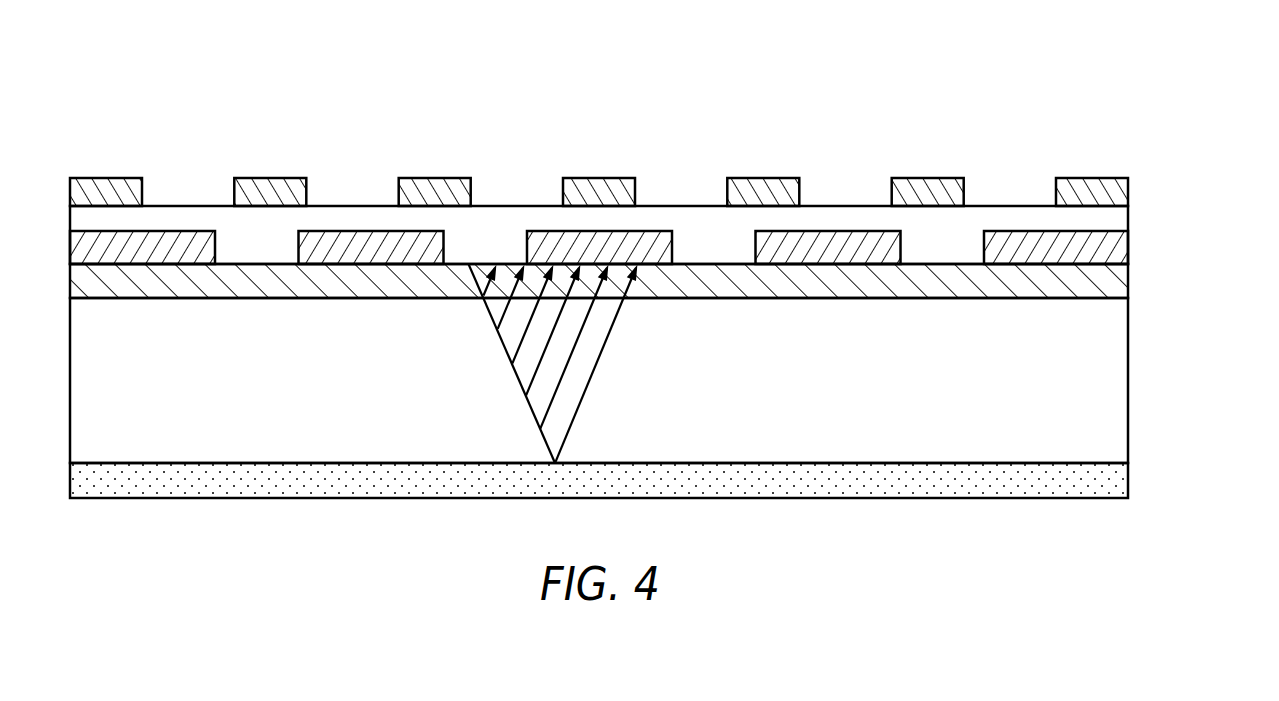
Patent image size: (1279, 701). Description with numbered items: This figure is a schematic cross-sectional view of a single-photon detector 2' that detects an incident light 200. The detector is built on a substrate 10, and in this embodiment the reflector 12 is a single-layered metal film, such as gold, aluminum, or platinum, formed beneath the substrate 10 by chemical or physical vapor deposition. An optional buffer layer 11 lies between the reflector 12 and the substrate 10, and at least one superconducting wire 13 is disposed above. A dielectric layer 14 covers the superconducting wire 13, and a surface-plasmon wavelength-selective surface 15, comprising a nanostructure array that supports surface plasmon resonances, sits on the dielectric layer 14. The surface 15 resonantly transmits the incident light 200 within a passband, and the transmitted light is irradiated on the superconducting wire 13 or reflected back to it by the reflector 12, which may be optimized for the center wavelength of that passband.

The single-photon detector 2' is at (669, 266).
The substrate 10 is at (1128, 398).
The buffer layer 11 is at (1128, 282).
The reflector 12 is at (1128, 484).
The superconducting wire 13 is at (1128, 252).
The dielectric layer 14 is at (1128, 222).
The surface-plasmon wavelength-selective surface 15 is at (1128, 194).
The incident light 200 is at (468, 264).